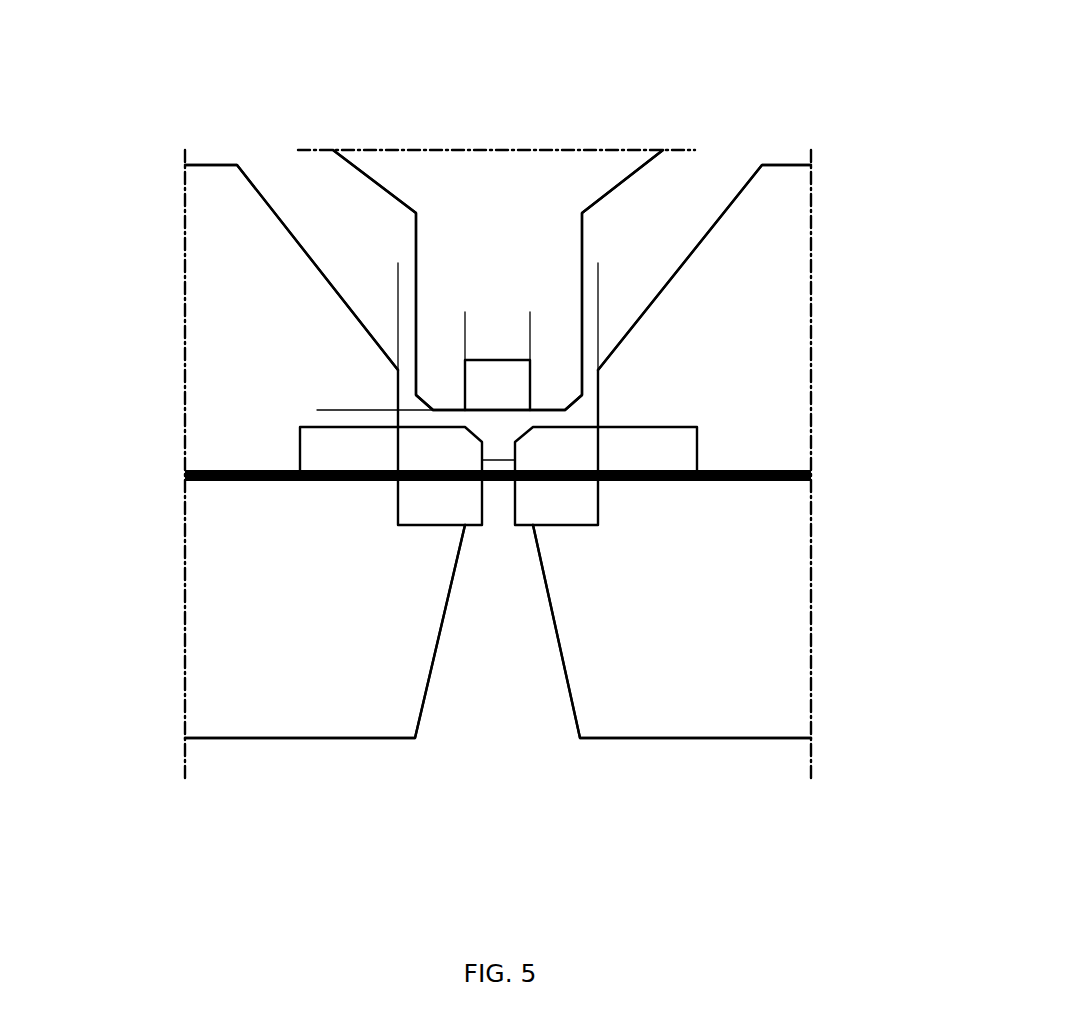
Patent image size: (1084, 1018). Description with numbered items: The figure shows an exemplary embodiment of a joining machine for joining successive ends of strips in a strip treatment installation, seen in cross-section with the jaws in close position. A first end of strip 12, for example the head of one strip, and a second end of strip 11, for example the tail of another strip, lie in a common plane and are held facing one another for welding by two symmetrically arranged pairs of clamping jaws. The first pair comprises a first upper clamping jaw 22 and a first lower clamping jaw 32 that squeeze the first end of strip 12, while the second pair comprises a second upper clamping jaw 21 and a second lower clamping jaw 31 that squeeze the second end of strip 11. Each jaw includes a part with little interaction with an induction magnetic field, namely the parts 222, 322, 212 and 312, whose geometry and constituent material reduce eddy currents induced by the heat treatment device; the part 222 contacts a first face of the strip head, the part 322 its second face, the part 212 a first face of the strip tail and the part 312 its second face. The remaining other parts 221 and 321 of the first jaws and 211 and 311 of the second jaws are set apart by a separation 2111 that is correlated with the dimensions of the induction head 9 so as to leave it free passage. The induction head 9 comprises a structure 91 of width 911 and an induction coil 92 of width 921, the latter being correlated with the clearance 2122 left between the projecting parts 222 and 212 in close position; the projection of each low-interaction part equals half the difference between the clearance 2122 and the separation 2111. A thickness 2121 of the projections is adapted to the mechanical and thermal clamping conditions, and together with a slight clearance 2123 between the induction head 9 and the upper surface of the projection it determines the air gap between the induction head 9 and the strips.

The induction head 9 is at (478, 85).
The structure 91 is at (551, 165).
The induction coil 92 is at (522, 392).
The width of the structure 911 is at (417, 230).
The width of the induction coil 921 is at (466, 330).
The separation 2111 is at (399, 280).
The second upper clamping jaw 21 is at (740, 172).
The other part of the second upper clamping jaw 211 is at (813, 167).
The part with little interaction with a magnetic field 212 is at (673, 444).
The thickness of the projection 2121 is at (663, 510).
The clearance 2122 is at (552, 460).
The slight clearance 2123 is at (351, 460).
The first upper clamping jaw 22 is at (258, 176).
The other part of the first upper clamping jaw 221 is at (183, 202).
The part with little interaction with a magnetic field 222 is at (322, 450).
The second end of strip 11 is at (813, 478).
The first end of strip 12 is at (183, 472).
The second lower clamping jaw 31 is at (745, 758).
The other part of the second lower clamping jaw 311 is at (813, 594).
The part with little interaction with a magnetic field 312 is at (564, 505).
The first lower clamping jaw 32 is at (270, 758).
The other part of the first lower clamping jaw 321 is at (183, 594).
The part with little interaction with a magnetic field 322 is at (425, 493).